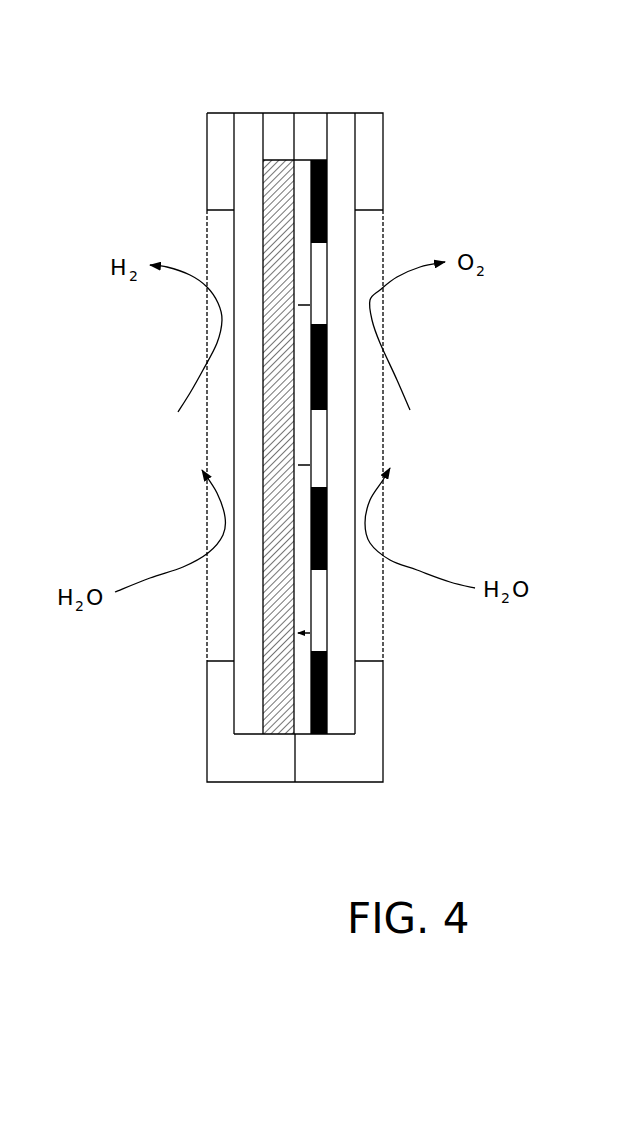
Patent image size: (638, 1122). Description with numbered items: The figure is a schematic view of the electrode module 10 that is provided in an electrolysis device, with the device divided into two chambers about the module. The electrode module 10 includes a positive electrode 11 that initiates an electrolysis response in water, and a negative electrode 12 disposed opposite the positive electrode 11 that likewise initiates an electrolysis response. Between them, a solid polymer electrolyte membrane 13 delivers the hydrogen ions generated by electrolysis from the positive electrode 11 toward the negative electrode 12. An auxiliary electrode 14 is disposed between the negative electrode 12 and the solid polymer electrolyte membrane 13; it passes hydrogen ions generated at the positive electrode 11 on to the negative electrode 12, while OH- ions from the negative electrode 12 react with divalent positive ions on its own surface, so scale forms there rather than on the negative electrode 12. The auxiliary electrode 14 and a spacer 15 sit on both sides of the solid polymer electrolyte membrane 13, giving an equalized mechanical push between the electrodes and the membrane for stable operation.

The electrode module 10 is at (128, 25).
The positive electrode 11 is at (347, 232).
The negative electrode 12 is at (245, 248).
The solid polymer electrolyte membrane 13 is at (312, 582).
The auxiliary electrode 14 is at (278, 192).
The spacer 15 is at (330, 505).